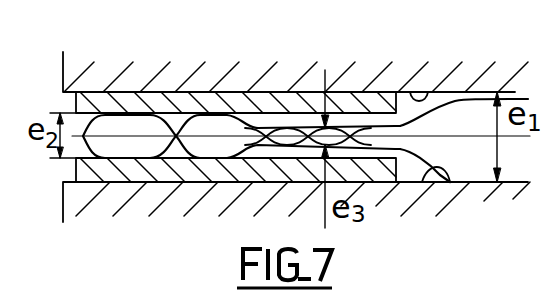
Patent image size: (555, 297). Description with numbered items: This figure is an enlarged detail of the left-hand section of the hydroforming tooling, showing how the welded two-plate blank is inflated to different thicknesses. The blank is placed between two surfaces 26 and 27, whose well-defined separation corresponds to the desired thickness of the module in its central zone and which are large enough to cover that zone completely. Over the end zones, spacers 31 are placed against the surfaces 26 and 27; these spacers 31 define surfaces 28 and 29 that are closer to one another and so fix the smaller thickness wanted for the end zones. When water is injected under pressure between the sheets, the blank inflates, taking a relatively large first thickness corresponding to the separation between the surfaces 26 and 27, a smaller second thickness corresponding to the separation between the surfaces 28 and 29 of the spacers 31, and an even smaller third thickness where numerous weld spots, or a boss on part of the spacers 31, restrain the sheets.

The surface 26 is at (428, 92).
The surface 27 is at (450, 182).
The surface 28 is at (118, 120).
The surface 29 is at (143, 115).
The spacers 31 is at (195, 101).